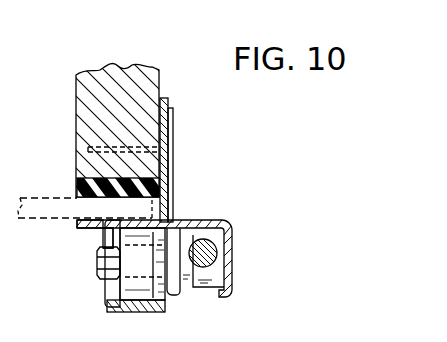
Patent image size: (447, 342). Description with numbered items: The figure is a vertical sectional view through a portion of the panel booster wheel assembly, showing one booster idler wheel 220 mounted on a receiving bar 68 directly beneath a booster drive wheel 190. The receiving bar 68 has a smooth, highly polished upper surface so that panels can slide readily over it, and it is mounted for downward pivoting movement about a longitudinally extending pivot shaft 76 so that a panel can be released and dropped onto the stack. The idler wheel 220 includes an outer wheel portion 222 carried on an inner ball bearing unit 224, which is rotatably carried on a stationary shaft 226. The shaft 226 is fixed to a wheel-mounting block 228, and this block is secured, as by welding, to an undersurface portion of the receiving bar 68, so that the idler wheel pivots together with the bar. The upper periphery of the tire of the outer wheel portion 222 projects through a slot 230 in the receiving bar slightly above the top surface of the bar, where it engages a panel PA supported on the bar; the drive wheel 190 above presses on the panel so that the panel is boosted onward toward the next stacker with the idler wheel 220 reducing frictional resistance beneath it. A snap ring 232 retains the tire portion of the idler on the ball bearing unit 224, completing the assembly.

The booster drive wheel 190 is at (76, 110).
The panel PA is at (48, 196).
The slot 230 is at (172, 221).
The snap ring 232 is at (103, 232).
The receiving bar 68 is at (216, 222).
The pivot shaft 76 is at (224, 251).
The wheel-mounting block 228 is at (180, 294).
The booster idler wheel 220 is at (109, 276).
The outer wheel portion 222 is at (120, 310).
The inner ball bearing unit 224 is at (101, 289).
The stationary shaft 226 is at (98, 268).